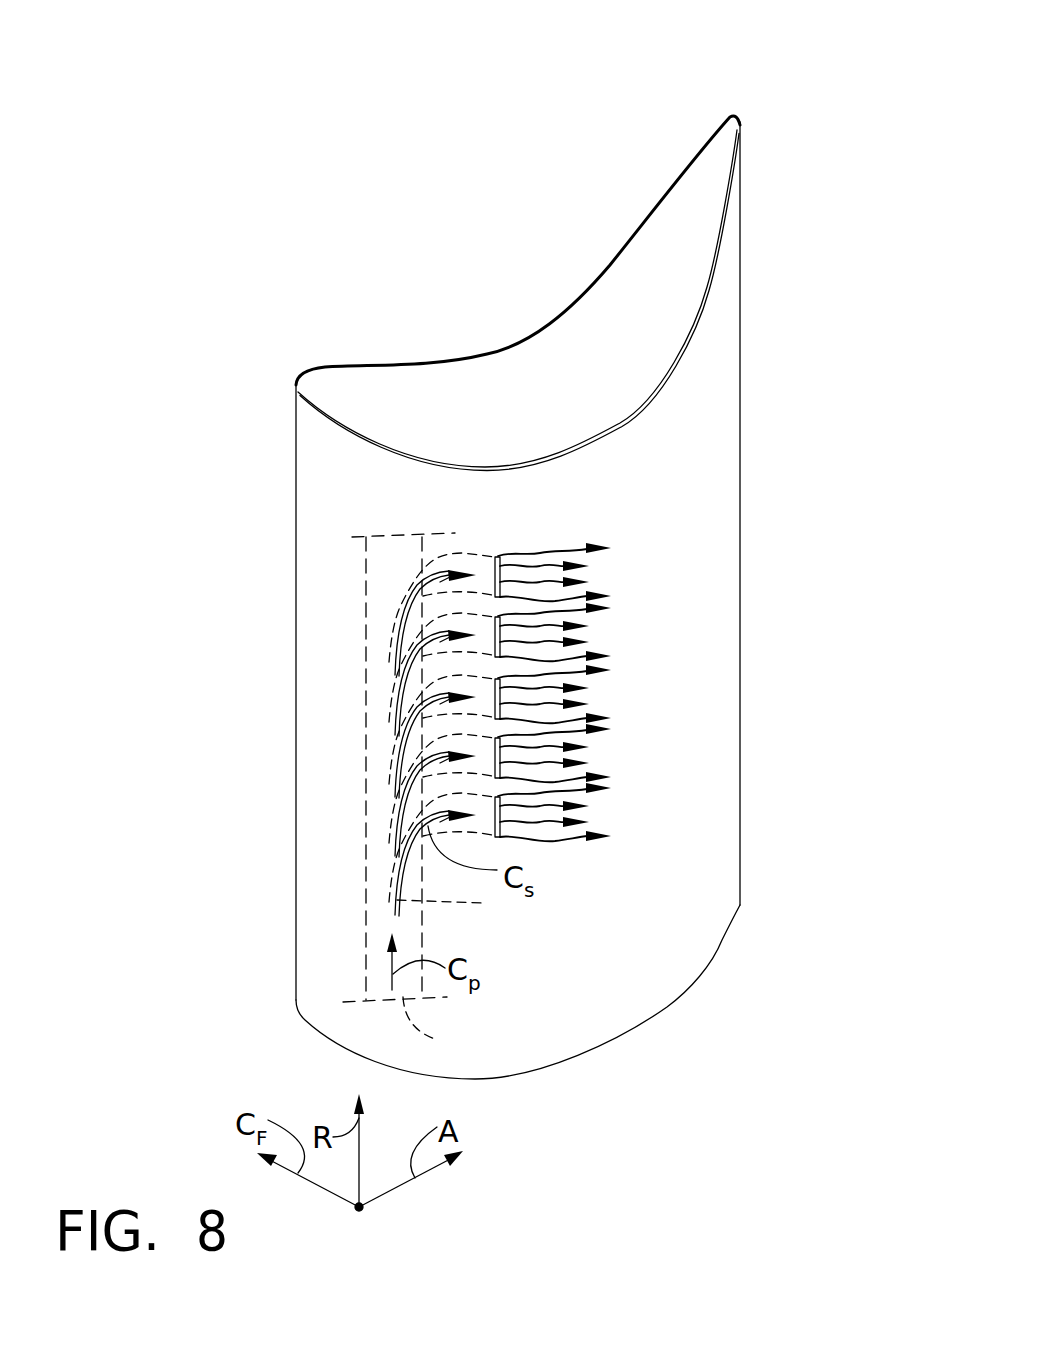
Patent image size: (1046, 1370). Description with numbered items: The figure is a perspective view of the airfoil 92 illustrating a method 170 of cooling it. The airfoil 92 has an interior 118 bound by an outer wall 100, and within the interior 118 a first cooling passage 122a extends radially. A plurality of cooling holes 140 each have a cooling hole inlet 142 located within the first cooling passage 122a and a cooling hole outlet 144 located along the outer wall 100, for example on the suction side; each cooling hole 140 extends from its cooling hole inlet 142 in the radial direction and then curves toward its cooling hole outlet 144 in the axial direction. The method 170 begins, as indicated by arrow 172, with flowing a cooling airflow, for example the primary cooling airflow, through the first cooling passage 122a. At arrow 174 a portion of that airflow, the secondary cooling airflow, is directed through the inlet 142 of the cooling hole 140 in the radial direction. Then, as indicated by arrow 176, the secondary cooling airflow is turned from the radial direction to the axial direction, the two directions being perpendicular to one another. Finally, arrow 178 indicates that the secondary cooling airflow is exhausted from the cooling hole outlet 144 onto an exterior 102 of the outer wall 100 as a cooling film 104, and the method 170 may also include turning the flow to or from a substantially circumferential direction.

The airfoil 92 is at (712, 187).
The outer wall 100 is at (693, 525).
The exterior 102 is at (650, 944).
The cooling film 104 is at (528, 707).
The interior 118 is at (446, 1026).
The first cooling passage 122a is at (377, 853).
The cooling hole 140 is at (413, 593).
The cooling hole inlet 142 is at (464, 903).
The cooling hole outlet 144 is at (496, 557).
The method of cooling the airfoil 170 is at (262, 82).
The arrow indicating flowing of cooling airflow 172 is at (345, 936).
The arrow indicating directing of secondary cooling airflow 174 is at (390, 697).
The arrow indicating turning of secondary cooling airflow 176 is at (420, 588).
The arrow indicating exhausting of secondary cooling airflow 178 is at (617, 782).